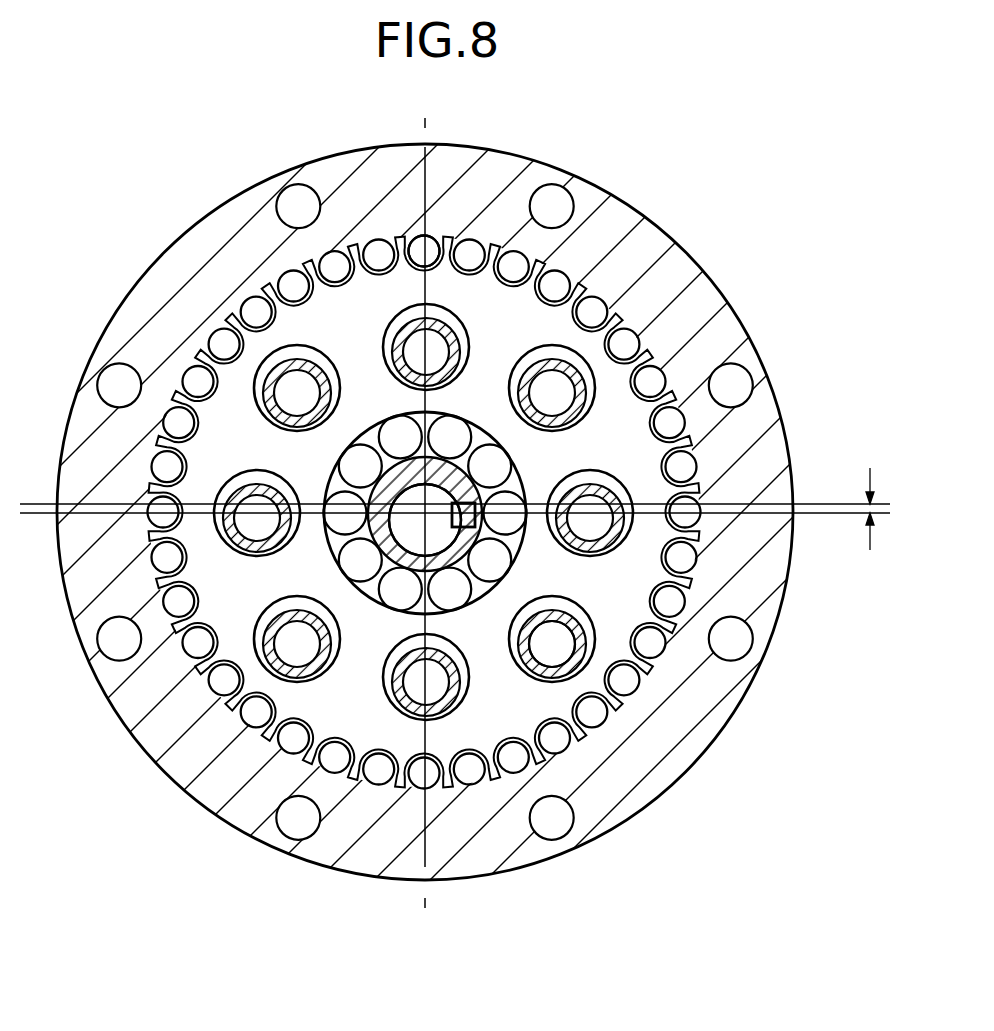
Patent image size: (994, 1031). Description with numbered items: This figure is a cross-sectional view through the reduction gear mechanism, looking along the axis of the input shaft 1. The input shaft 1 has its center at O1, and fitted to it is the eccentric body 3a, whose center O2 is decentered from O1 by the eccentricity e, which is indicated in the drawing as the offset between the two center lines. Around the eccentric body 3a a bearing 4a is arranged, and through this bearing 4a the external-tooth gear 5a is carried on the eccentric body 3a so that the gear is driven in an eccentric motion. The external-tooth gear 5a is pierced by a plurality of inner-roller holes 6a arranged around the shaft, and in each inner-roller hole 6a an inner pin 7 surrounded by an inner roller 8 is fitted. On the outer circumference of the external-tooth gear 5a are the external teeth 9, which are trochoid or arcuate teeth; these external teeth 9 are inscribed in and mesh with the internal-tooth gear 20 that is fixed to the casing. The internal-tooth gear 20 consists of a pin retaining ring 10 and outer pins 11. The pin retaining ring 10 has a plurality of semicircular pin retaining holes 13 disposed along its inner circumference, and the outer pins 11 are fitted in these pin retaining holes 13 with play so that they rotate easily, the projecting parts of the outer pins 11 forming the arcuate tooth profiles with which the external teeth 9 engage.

The input shaft 1 is at (408, 533).
The eccentric body 3a is at (498, 494).
The bearing 4a is at (487, 466).
The external-tooth gear 5a is at (598, 392).
The inner-roller hole 6a is at (640, 493).
The inner pin 7 is at (550, 638).
The inner roller 8 is at (527, 663).
The external teeth 9 is at (575, 300).
The pin retaining ring 10 is at (512, 168).
The outer pin 11 is at (375, 254).
The pin retaining hole 13 is at (385, 252).
The internal-tooth gear 20 is at (603, 190).
The center of the input shaft O1 is at (330, 494).
The center of the eccentric body O2 is at (400, 483).
The eccentricity e is at (872, 522).